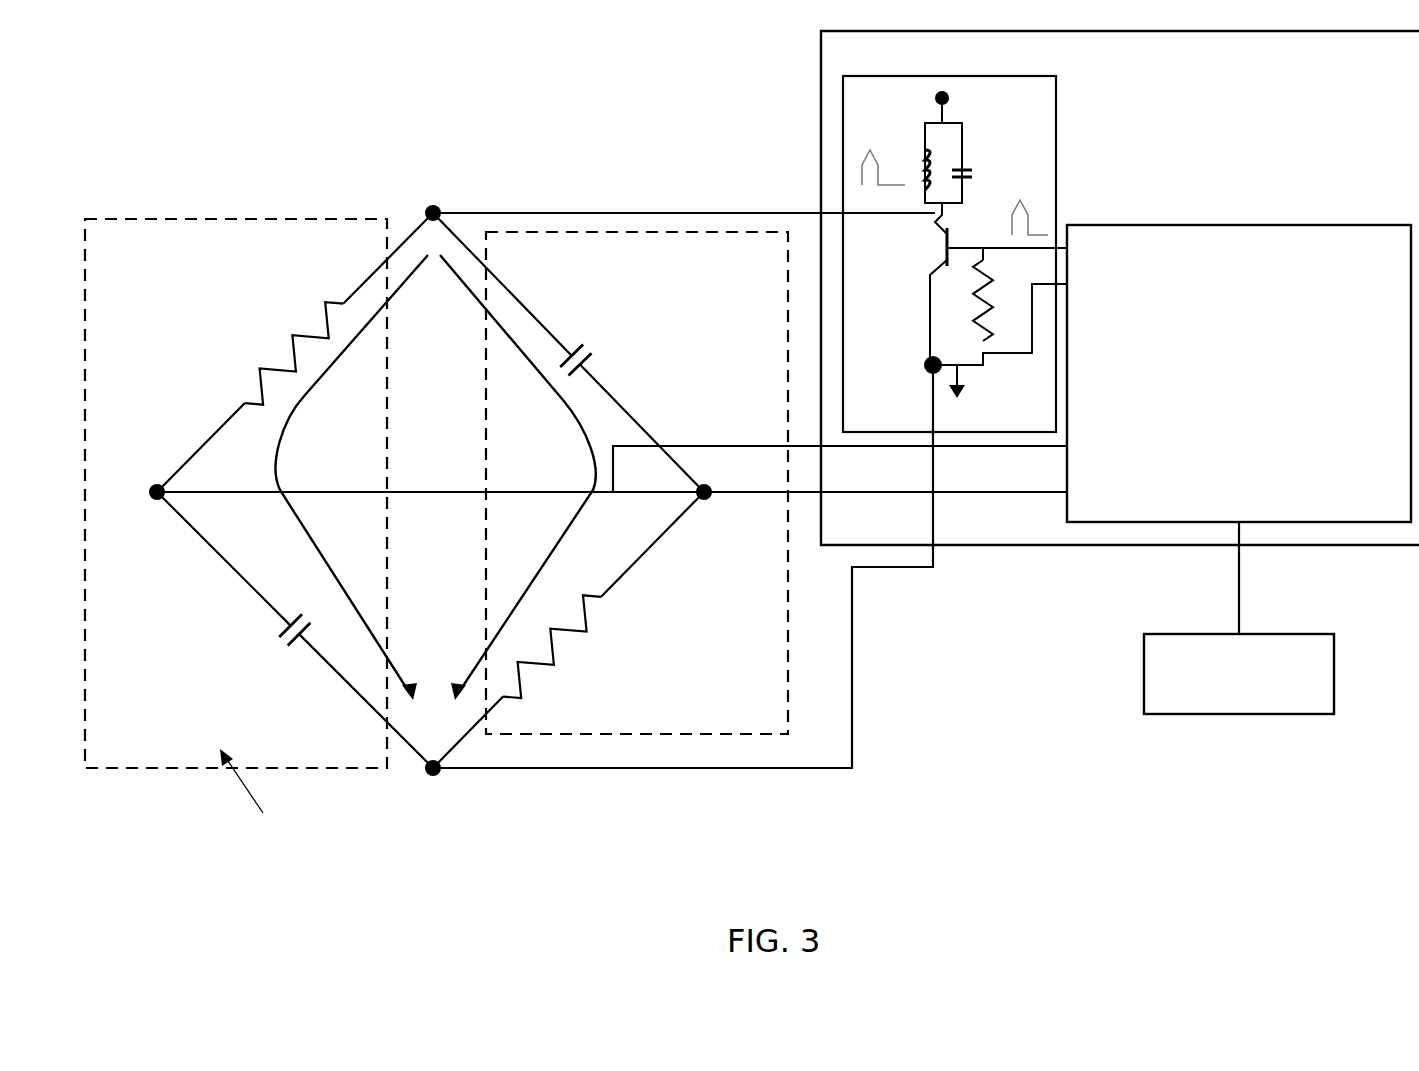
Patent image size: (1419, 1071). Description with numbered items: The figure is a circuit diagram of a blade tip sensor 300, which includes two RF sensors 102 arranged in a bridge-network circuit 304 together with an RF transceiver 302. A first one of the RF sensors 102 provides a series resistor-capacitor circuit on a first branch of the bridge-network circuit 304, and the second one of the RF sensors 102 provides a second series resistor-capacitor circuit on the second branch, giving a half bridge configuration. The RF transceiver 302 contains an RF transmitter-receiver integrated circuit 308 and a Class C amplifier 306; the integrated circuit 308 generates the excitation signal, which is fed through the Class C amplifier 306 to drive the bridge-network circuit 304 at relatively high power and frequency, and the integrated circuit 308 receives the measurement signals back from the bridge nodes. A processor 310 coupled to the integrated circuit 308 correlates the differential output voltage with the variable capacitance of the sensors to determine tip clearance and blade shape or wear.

The blade tip sensor 300 is at (544, 863).
The RF transceiver 302 is at (1120, 288).
The bridge-network circuit 304 is at (770, 132).
The Class C amplifier 306 is at (1056, 96).
The RF transmitter-receiver integrated circuit 308 is at (1160, 224).
The processor 310 is at (1272, 634).
The RF sensor 102 is at (436, 493).